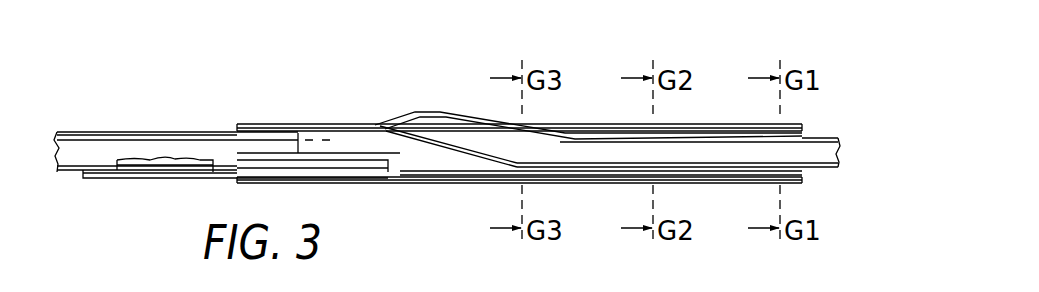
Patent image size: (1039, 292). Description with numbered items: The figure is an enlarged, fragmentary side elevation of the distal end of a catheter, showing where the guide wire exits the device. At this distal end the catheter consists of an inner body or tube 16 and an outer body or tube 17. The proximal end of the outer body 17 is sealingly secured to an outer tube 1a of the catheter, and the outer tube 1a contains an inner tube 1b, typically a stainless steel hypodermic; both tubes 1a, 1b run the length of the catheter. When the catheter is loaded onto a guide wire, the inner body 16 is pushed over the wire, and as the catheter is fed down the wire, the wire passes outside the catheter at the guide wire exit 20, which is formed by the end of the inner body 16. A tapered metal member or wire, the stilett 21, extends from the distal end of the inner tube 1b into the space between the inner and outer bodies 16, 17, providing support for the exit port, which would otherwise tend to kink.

The outer tube 1a is at (84, 173).
The inner tube 1b is at (84, 168).
The inner body 16 is at (838, 170).
The outer body 17 is at (803, 123).
The guide wire exit 20 is at (420, 112).
The stilett 21 is at (386, 168).